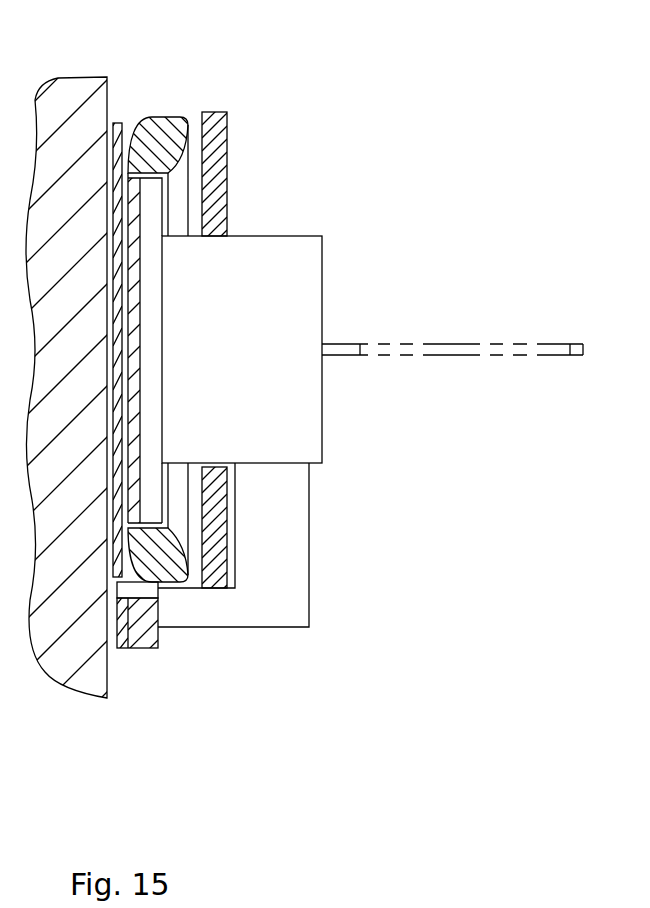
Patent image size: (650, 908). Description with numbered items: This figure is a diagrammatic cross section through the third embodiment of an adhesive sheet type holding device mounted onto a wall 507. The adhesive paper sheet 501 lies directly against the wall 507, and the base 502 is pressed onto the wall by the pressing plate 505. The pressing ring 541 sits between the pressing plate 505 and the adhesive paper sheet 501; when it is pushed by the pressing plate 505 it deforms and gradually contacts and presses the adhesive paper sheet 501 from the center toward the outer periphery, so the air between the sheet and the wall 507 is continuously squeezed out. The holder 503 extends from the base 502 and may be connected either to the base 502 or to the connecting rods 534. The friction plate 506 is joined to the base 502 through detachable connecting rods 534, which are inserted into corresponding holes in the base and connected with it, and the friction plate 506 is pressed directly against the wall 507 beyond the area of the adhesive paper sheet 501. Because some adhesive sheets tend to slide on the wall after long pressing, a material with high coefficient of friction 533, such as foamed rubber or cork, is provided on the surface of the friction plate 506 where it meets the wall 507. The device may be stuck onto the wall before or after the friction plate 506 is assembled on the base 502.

The adhesive paper sheet 501 is at (118, 122).
The base 502 is at (335, 269).
The holder 503 is at (441, 343).
The pressing plate 505 is at (212, 120).
The friction plate 506 is at (153, 641).
The wall 507 is at (62, 645).
The material with high coefficient of friction 533 is at (120, 651).
The connecting rods 534 is at (295, 548).
The pressing ring 541 is at (158, 137).